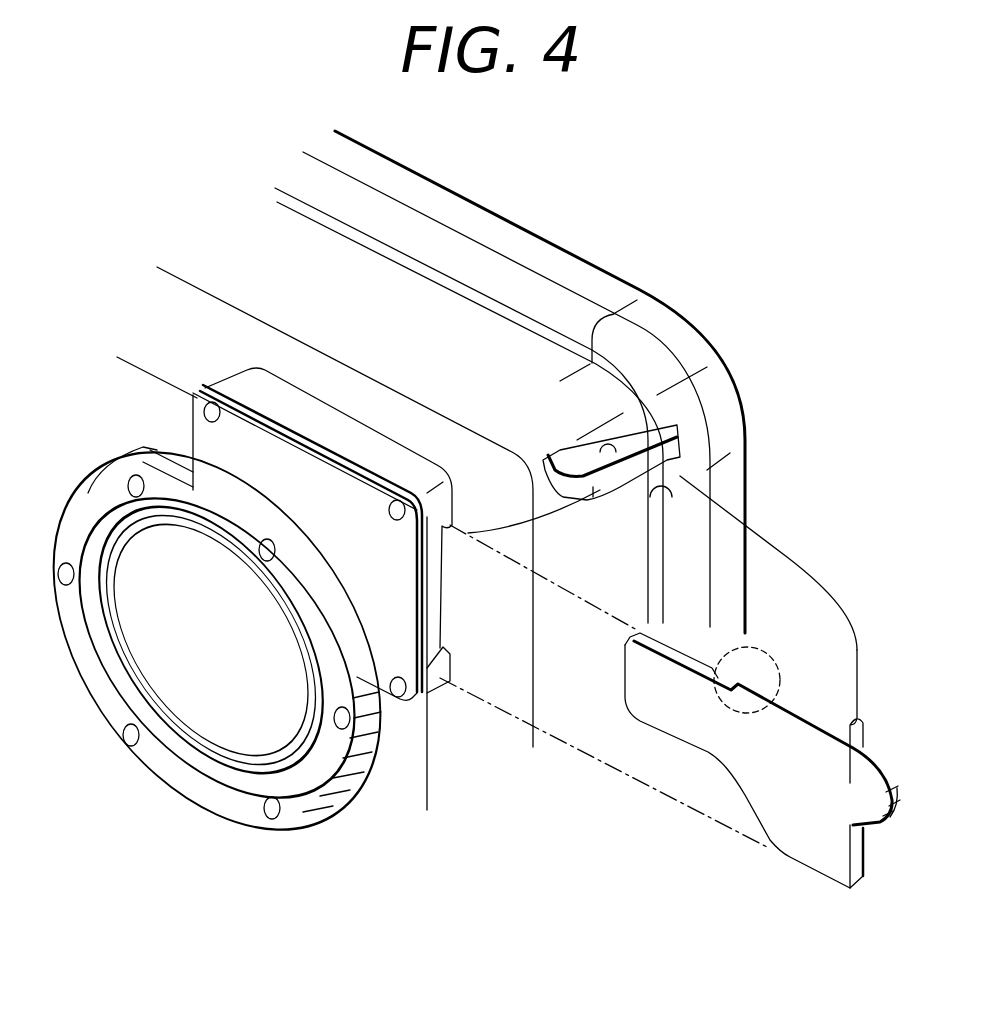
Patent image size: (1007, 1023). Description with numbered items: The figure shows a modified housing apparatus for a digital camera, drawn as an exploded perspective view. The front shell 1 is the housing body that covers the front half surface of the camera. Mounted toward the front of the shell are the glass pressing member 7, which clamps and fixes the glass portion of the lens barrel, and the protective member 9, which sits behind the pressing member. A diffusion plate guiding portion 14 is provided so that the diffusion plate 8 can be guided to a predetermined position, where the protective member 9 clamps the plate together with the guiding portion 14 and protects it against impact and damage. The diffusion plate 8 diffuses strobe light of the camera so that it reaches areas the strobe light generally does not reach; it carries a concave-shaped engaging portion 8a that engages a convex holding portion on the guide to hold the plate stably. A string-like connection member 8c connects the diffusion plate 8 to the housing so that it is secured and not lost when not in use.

The front shell 1 is at (693, 333).
The glass pressing member 7 is at (165, 772).
The diffusion plate 8 is at (771, 682).
The concave-shaped engaging portion 8a is at (747, 645).
The connection member 8c is at (838, 592).
The protective member 9 is at (325, 583).
The diffusion plate guiding portion 14 is at (447, 643).